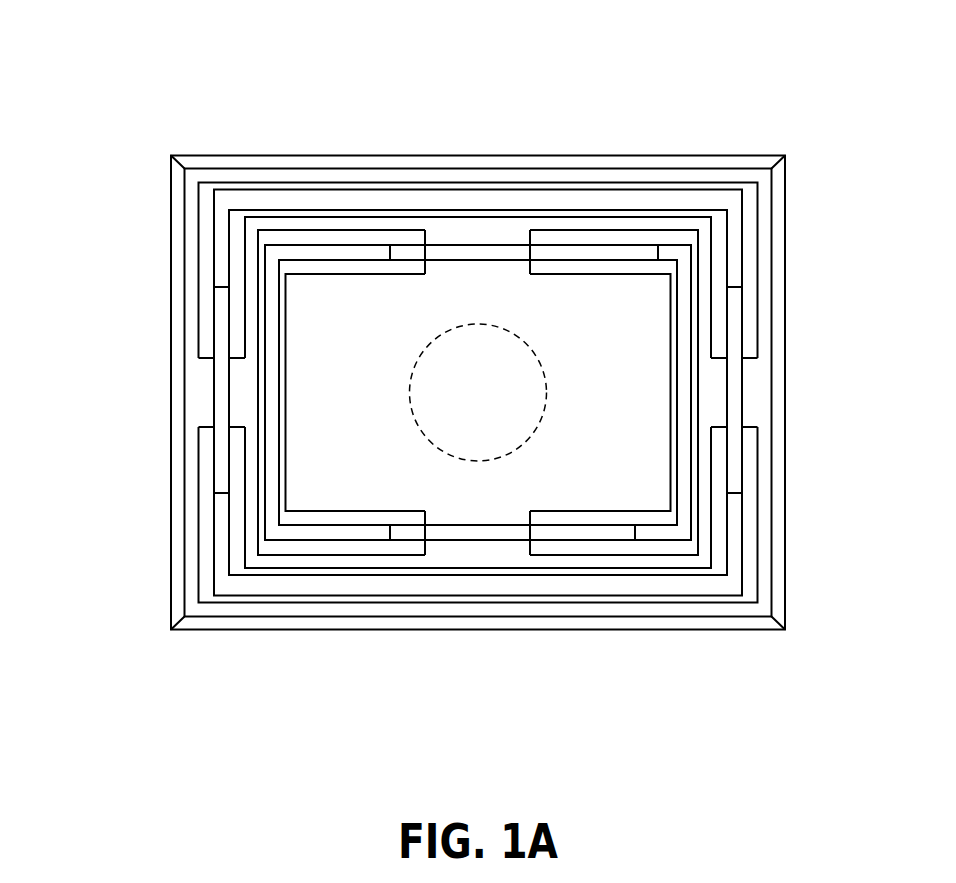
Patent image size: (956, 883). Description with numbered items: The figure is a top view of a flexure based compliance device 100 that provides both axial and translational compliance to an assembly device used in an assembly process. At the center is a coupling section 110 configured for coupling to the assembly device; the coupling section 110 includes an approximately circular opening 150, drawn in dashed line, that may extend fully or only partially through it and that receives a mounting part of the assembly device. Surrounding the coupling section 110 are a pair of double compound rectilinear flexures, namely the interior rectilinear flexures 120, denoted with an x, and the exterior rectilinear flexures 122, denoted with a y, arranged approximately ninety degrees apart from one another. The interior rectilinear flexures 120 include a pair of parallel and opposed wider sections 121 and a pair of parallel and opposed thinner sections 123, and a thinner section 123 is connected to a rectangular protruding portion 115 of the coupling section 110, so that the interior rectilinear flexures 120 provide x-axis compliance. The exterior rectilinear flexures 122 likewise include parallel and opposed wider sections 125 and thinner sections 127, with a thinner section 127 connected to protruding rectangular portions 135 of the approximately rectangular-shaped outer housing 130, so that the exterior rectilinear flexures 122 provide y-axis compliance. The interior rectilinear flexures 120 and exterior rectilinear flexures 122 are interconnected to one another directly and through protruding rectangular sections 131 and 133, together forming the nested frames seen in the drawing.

The flexure based compliance device 100 is at (203, 46).
The coupling section 110 is at (346, 318).
The rectangular protruding portion 115 is at (530, 268).
The interior rectilinear flexure 120 is at (818, 364).
The wider section 121 is at (276, 488).
The exterior rectilinear flexure 122 is at (372, 660).
The thinner section 123 is at (657, 252).
The wider section 125 is at (560, 227).
The thinner section 127 is at (222, 490).
The outer housing 130 is at (785, 218).
The protruding rectangular section 131 is at (238, 409).
The protruding rectangular section 133 is at (493, 225).
The protruding rectangular portion 135 is at (207, 358).
The opening 150 is at (423, 440).